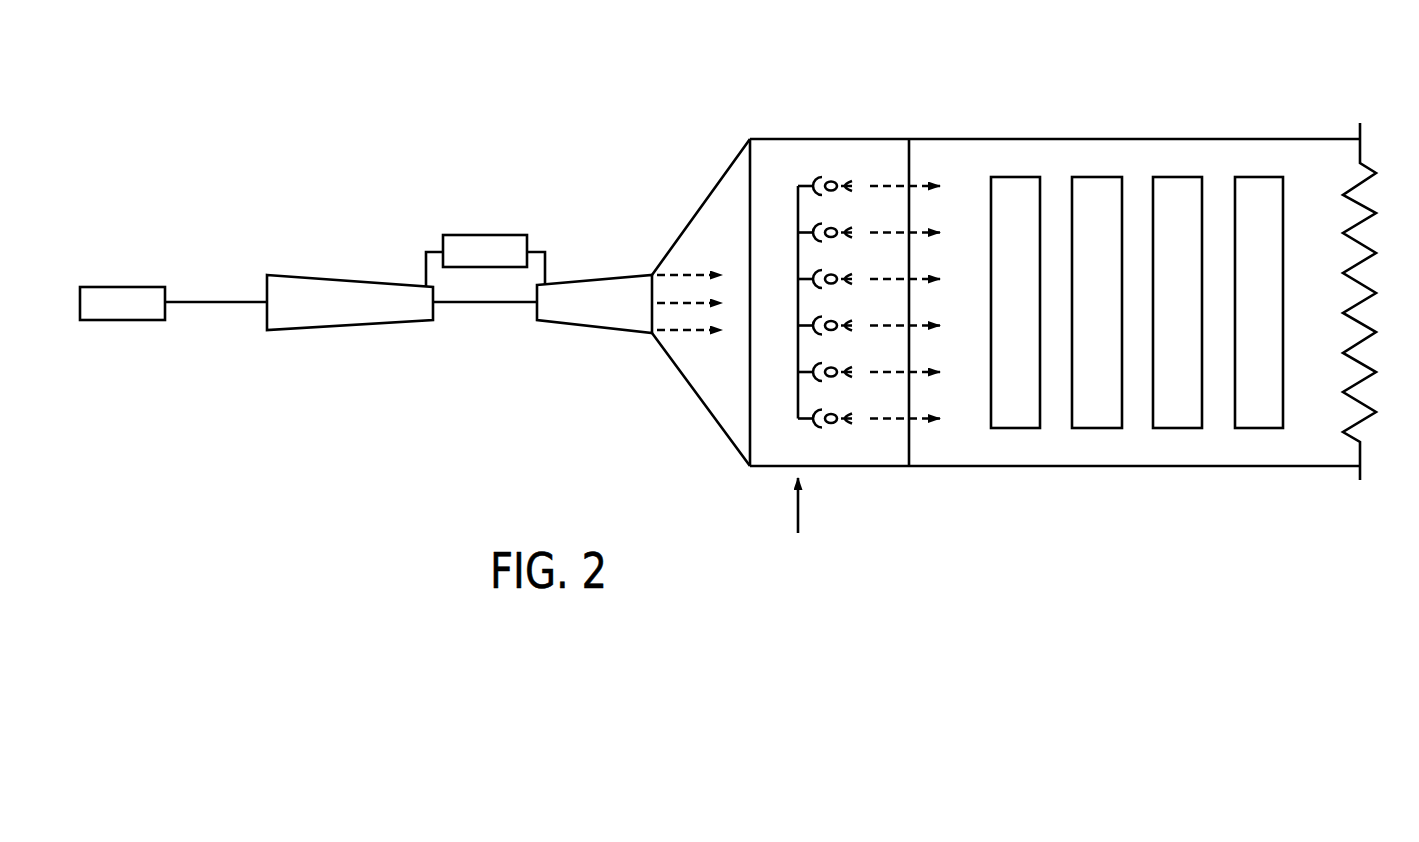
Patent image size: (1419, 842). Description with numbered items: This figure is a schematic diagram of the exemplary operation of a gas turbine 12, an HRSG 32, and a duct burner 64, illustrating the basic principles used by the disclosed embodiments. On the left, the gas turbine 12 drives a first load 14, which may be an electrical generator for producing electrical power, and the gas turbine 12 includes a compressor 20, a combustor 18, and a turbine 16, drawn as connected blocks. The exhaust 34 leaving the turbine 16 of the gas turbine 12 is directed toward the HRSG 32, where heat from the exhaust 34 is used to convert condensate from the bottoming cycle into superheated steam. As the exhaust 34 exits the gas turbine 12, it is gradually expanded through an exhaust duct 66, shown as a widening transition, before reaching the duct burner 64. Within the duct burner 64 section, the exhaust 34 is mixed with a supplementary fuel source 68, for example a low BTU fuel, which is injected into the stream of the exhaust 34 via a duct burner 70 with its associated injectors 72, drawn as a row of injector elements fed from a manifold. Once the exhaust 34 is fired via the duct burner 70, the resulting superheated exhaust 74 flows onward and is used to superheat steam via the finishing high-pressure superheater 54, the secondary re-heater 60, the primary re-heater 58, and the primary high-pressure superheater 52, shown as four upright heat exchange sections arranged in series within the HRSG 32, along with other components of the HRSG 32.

The gas turbine 12 is at (416, 387).
The first load 14 is at (120, 287).
The turbine 16 is at (592, 279).
The combustor 18 is at (483, 235).
The compressor 20 is at (347, 279).
The HRSG 32 is at (1324, 66).
The exhaust 34 is at (687, 337).
The primary high-pressure superheater 52 is at (1257, 177).
The finishing high-pressure superheater 54 is at (1012, 177).
The primary re-heater 58 is at (1177, 177).
The secondary re-heater 60 is at (1094, 177).
The duct burner 64 is at (828, 139).
The exhaust duct 66 is at (702, 205).
The supplementary fuel source 68 is at (798, 510).
The duct burner 70 is at (798, 208).
The injectors 72 is at (798, 372).
The superheated exhaust 74 is at (922, 427).